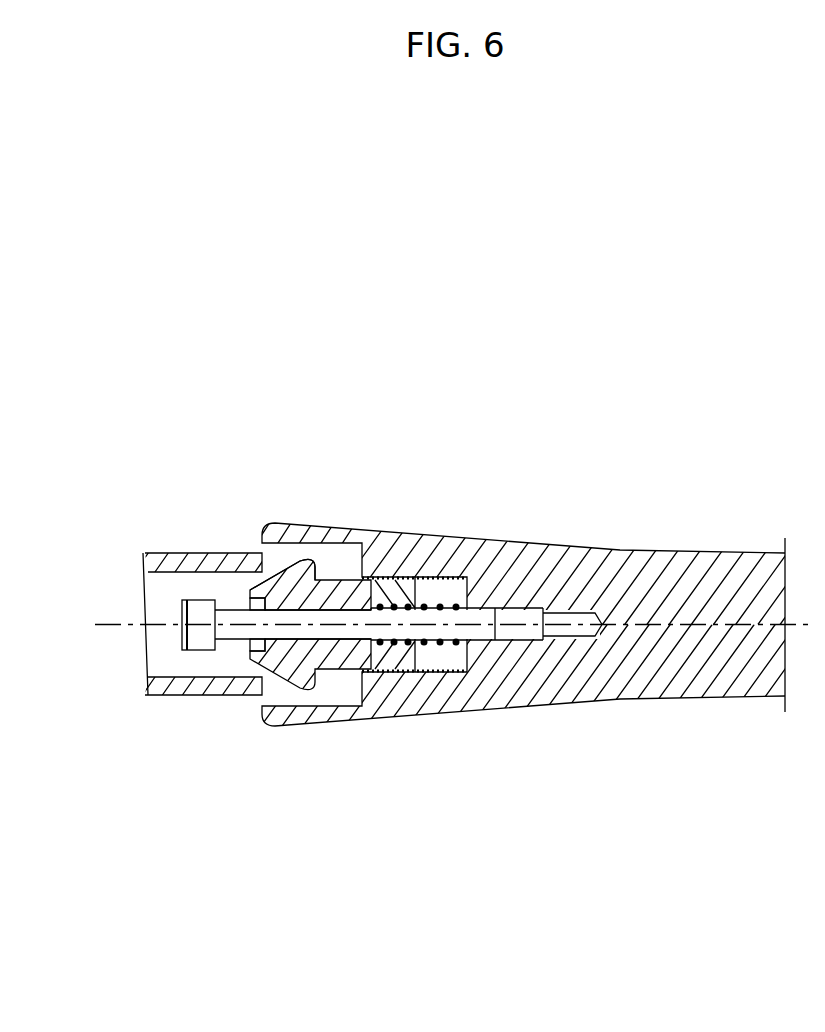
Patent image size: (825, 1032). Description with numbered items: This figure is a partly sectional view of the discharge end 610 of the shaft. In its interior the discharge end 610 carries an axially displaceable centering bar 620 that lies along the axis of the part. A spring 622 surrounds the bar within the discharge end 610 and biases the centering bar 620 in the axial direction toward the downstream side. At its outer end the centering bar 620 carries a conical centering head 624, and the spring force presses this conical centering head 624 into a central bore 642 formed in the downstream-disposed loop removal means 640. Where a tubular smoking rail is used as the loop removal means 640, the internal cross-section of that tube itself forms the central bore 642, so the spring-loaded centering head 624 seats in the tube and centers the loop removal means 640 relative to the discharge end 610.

The discharge end 610 is at (687, 495).
The centering bar 620 is at (350, 660).
The spring 622 is at (440, 580).
The conical centering head 624 is at (302, 577).
The loop removal means 640 is at (158, 695).
The central bore 642 is at (170, 600).